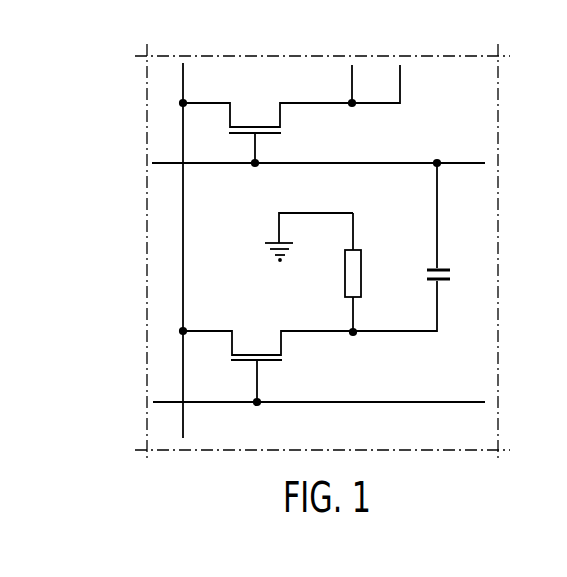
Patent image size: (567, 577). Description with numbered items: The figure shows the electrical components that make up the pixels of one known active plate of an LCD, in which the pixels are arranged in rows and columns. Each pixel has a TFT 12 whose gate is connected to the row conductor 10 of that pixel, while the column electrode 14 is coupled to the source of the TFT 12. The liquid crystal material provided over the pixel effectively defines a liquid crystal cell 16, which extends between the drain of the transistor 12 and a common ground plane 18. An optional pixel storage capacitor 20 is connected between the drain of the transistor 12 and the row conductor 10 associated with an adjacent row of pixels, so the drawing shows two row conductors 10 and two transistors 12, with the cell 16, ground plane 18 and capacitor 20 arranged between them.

The row conductor 10 is at (162, 163).
The TFT 12 is at (255, 98).
The column electrode 14 is at (182, 252).
The liquid crystal cell 16 is at (345, 278).
The common ground plane 18 is at (265, 245).
The pixel storage capacitor 20 is at (427, 275).